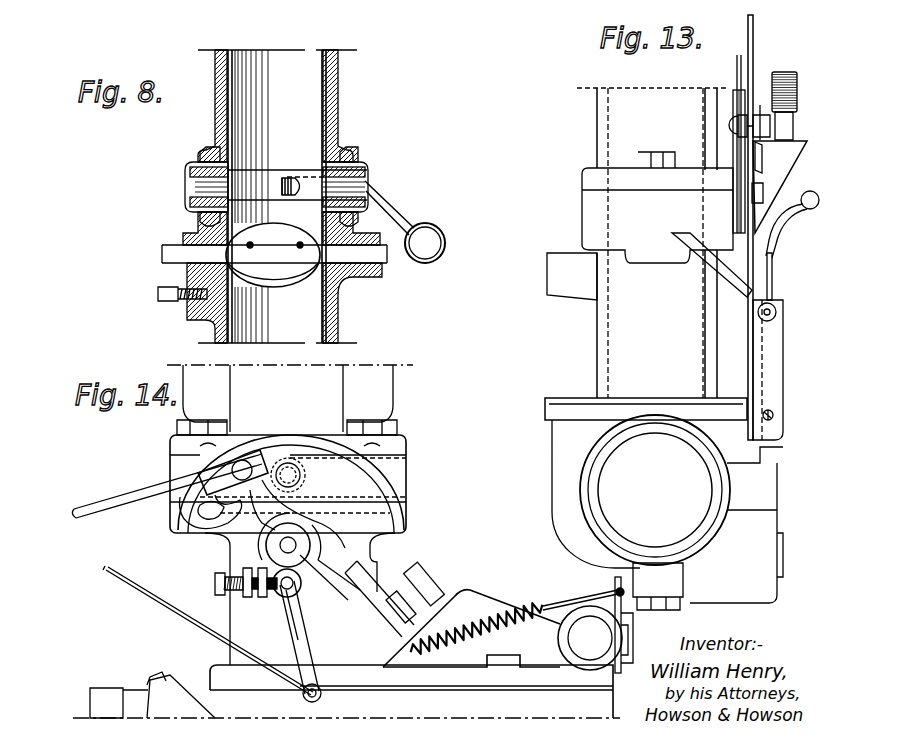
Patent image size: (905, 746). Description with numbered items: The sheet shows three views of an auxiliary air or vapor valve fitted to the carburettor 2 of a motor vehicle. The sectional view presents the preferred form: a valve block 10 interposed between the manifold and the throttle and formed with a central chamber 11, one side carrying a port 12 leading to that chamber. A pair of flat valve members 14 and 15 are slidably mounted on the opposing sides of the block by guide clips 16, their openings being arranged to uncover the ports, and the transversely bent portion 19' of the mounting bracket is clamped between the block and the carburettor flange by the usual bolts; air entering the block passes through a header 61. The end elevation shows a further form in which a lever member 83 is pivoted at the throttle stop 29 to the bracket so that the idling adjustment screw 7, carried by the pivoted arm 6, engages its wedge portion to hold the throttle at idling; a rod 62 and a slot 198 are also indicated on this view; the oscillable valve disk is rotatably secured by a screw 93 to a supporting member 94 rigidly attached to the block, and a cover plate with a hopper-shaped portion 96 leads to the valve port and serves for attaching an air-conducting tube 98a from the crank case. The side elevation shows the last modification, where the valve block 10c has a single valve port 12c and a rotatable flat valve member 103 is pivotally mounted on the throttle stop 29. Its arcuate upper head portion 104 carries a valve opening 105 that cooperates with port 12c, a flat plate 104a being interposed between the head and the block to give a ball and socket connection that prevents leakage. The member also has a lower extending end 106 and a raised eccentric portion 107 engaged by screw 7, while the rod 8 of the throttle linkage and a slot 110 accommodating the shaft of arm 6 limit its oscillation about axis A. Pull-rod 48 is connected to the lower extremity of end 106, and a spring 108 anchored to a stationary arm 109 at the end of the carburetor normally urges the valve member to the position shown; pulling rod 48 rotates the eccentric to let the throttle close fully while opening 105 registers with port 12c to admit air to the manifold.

In FIG. 13, the carburettor 2 is at (556, 476).
In FIG. 14, the pivoted arm 6 is at (250, 523).
In FIG. 13, the pivoted arm 6 is at (788, 216).
In FIG. 14, the idling adjustment screw 7 is at (214, 586).
In FIG. 14, the rod 8 is at (116, 498).
In FIG. 8, the valve block 10 is at (323, 171).
In FIG. 14, the valve block 10c is at (406, 480).
In FIG. 8, the central chamber 11 is at (264, 185).
In FIG. 8, the port 12 is at (205, 191).
In FIG. 14, the valve port 12c is at (306, 475).
In FIG. 8, the flat valve member 14 is at (196, 165).
In FIG. 8, the flat valve member 15 is at (352, 170).
In FIG. 8, the guide clips 16 is at (190, 185).
In FIG. 8, the transversely bent portion 19' is at (273, 245).
In FIG. 14, the throttle stop 29 is at (278, 590).
In FIG. 14, the pull-rod 48 is at (158, 608).
In FIG. 8, the header 61 is at (430, 224).
In FIG. 13, the rod 62 is at (738, 62).
In FIG. 13, the lever member 83 is at (768, 340).
In FIG. 13, the screw 93 is at (730, 118).
In FIG. 13, the supporting member 94 is at (736, 96).
In FIG. 13, the hopper-shaped portion 96 is at (800, 165).
In FIG. 13, the air-conducting tube 98a is at (797, 98).
In FIG. 14, the rotatable flat valve member 103 is at (314, 577).
In FIG. 14, the upper head portion 104 is at (360, 472).
In FIG. 14, the flat plate 104a is at (395, 478).
In FIG. 14, the valve opening 105 is at (202, 538).
In FIG. 14, the lower extending end 106 is at (282, 637).
In FIG. 14, the raised eccentric portion 107 is at (302, 615).
In FIG. 14, the spring 108 is at (512, 607).
In FIG. 14, the arm 109 is at (615, 580).
In FIG. 14, the slot 110 is at (318, 563).
In FIG. 13, the slot 198 is at (750, 385).
In FIG. 14, the axis A is at (322, 534).